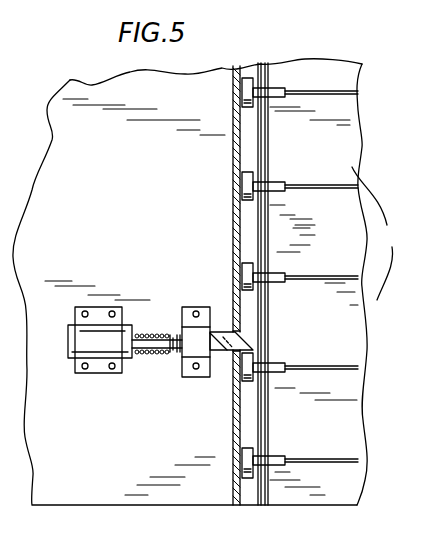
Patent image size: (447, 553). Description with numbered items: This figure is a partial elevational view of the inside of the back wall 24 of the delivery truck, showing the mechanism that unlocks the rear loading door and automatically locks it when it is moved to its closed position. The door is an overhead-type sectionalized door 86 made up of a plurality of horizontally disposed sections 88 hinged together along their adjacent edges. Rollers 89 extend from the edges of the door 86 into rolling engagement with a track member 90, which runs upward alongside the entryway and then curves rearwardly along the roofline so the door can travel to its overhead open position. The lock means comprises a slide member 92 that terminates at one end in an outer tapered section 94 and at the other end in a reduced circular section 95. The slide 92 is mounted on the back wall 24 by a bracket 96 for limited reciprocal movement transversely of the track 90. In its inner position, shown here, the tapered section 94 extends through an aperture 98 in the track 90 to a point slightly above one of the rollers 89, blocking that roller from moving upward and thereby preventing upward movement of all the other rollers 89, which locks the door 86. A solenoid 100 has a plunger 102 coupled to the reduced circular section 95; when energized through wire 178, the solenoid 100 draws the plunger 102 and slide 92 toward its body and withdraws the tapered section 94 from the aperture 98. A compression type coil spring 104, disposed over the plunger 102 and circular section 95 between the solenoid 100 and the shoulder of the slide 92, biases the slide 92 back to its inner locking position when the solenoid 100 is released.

The back wall 24 is at (140, 219).
The sectionalized door 86 is at (365, 141).
The horizontally disposed sections 88 is at (353, 250).
The rollers 89 is at (243, 91).
The track members 90 is at (240, 218).
The slide member 92 is at (178, 330).
The tapered section 94 is at (243, 338).
The reduced circular section 95 is at (175, 355).
The bracket 96 is at (212, 355).
The aperture 98 is at (240, 332).
The solenoid 100 is at (73, 344).
The plunger 102 is at (140, 345).
The compression type coil spring 104 is at (158, 347).
The wire 178 is at (53, 352).